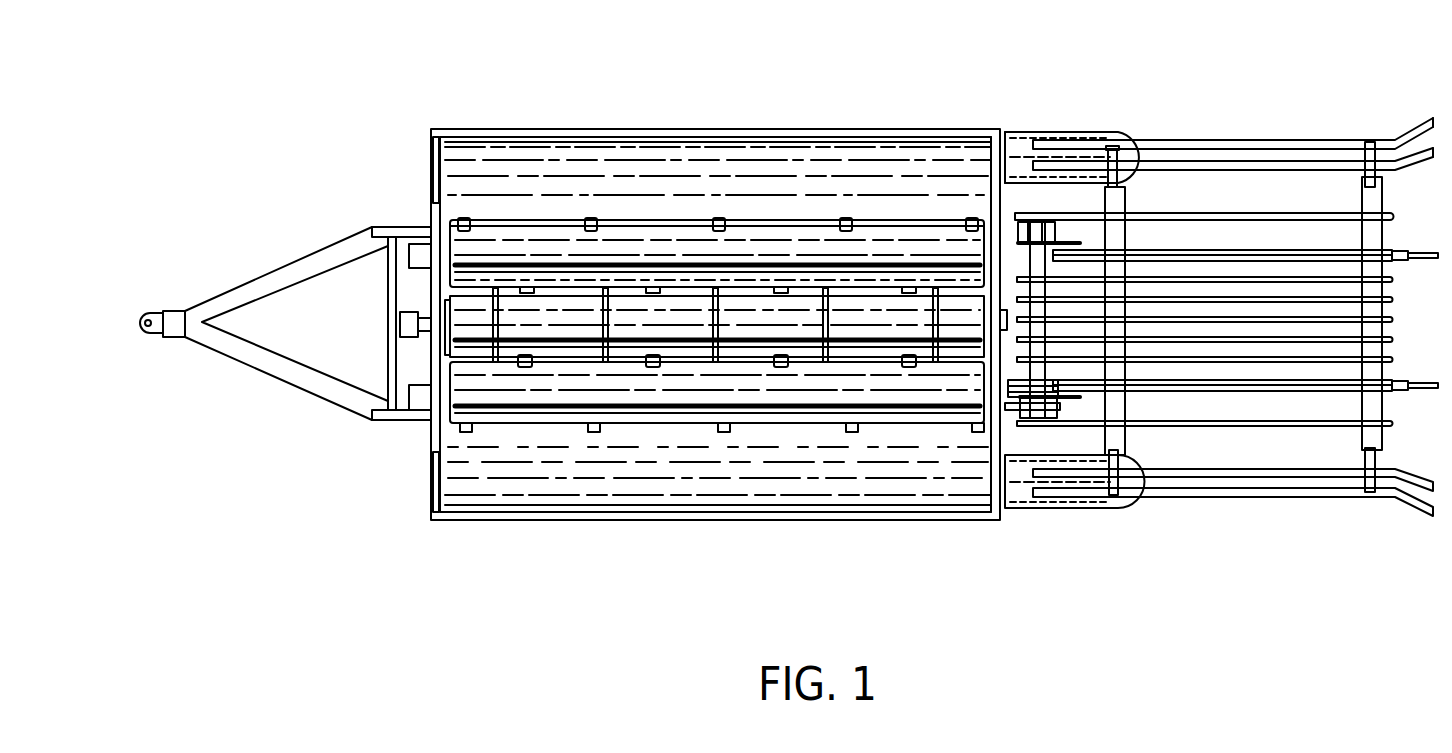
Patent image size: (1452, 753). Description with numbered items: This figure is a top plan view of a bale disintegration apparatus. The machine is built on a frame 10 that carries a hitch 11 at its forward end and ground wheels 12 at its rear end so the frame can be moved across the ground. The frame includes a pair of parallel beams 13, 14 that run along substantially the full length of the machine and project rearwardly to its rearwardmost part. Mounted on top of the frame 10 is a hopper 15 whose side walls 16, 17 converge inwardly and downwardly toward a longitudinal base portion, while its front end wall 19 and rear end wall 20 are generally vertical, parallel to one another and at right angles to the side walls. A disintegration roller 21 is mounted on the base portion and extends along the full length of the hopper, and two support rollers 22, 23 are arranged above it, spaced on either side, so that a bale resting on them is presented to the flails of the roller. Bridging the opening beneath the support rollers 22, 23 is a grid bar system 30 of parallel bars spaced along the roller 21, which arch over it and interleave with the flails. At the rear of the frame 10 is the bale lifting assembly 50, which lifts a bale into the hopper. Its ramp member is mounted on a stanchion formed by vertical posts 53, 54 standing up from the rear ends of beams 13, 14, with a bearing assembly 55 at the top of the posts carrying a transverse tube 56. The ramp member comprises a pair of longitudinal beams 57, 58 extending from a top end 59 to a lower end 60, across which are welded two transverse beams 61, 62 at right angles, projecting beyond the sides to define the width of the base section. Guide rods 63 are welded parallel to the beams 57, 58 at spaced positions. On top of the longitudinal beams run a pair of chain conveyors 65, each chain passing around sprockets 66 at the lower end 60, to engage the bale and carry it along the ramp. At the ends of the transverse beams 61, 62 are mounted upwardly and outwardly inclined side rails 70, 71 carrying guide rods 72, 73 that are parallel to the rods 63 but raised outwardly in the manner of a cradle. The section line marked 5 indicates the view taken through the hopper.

The section line 5- 5 is at (670, 113).
The frame 10 is at (305, 248).
The hitch 11 is at (156, 300).
The ground wheels 12 is at (1022, 130).
The parallel beam 13 is at (403, 232).
The parallel beam 14 is at (397, 412).
The hopper 15 is at (832, 88).
The side wall 16 is at (622, 135).
The side wall 17 is at (822, 490).
The front end wall 19 is at (432, 172).
The rear end wall 20 is at (983, 212).
The disintegration roller 21 is at (549, 303).
The support roller 22 is at (747, 250).
The support roller 23 is at (664, 402).
The grid bar system 30 is at (634, 292).
The bale lifting assembly 50 is at (1221, 80).
The vertical post 53 is at (1056, 230).
The vertical post 54 is at (1052, 420).
The bearing assembly 55 is at (1016, 440).
The transverse tube 56 is at (1028, 377).
The longitudinal beam 57 is at (1297, 250).
The longitudinal beam 58 is at (1396, 392).
The top end 59 is at (1053, 125).
The lower end 60 is at (1431, 100).
The transverse beam 61 is at (1122, 235).
The transverse beam 62 is at (1361, 200).
The guide rods 63 is at (1214, 272).
The chain conveyors 65 is at (1397, 262).
The sprockets 66 is at (1436, 250).
The side rail 70 is at (1117, 465).
The side rail 71 is at (1138, 110).
The guide rod 72 is at (1195, 140).
The guide rod 73 is at (1263, 160).